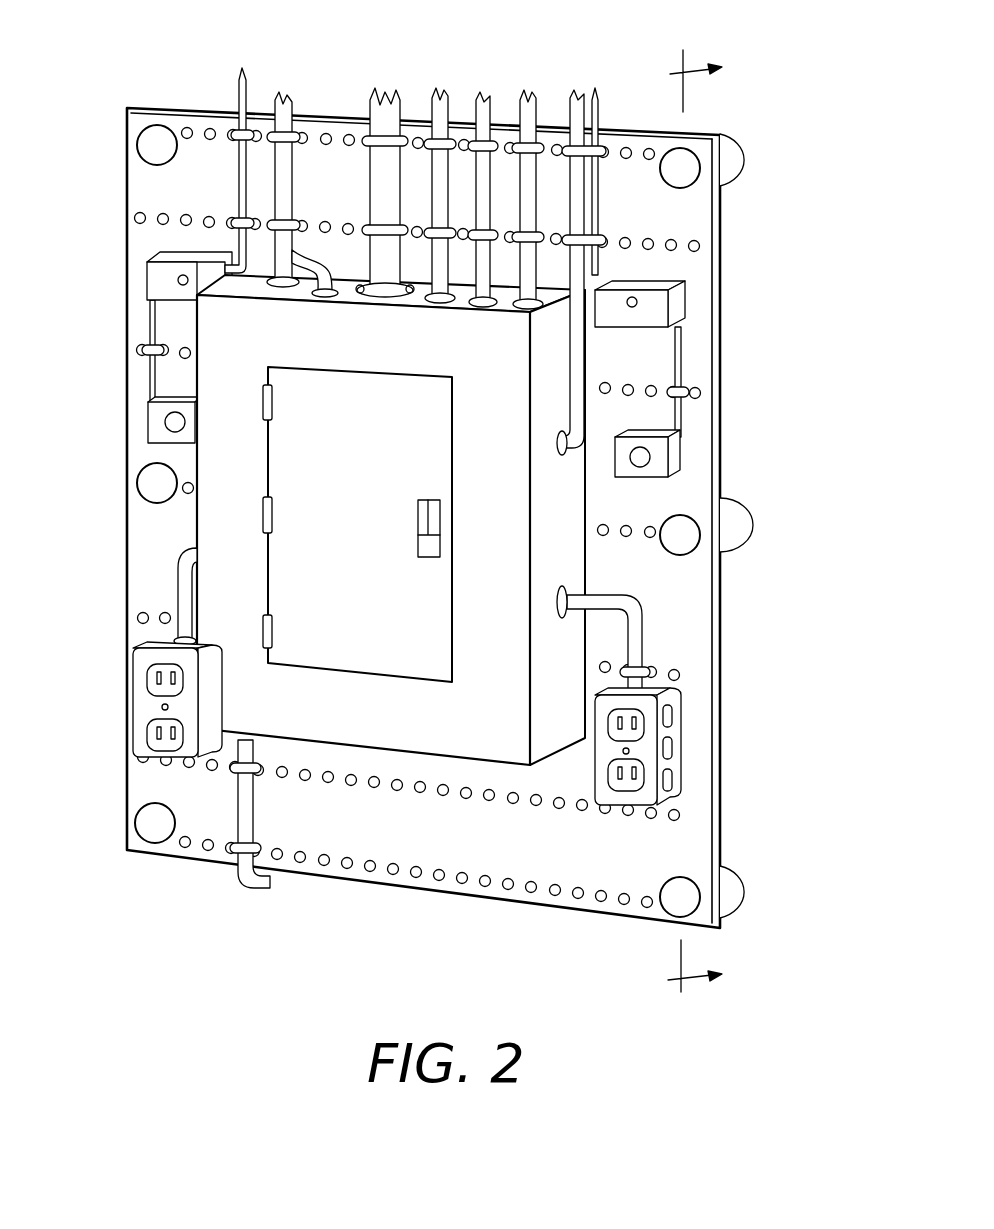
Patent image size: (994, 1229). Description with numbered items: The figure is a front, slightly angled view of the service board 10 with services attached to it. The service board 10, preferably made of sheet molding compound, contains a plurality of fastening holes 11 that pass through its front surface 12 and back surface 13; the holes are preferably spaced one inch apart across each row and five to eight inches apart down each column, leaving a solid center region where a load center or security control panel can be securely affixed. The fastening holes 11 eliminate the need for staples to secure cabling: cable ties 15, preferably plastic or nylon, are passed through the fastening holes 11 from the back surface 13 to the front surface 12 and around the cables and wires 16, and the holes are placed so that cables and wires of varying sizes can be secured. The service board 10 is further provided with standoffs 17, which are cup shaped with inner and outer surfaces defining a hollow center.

The service board 10 is at (126, 521).
The fastening holes 11 is at (200, 130).
The front surface 12 is at (694, 272).
The back surface 13 is at (710, 574).
The cable ties 15 is at (410, 108).
The cables and wires 16 is at (388, 95).
The standoffs 17 is at (733, 152).